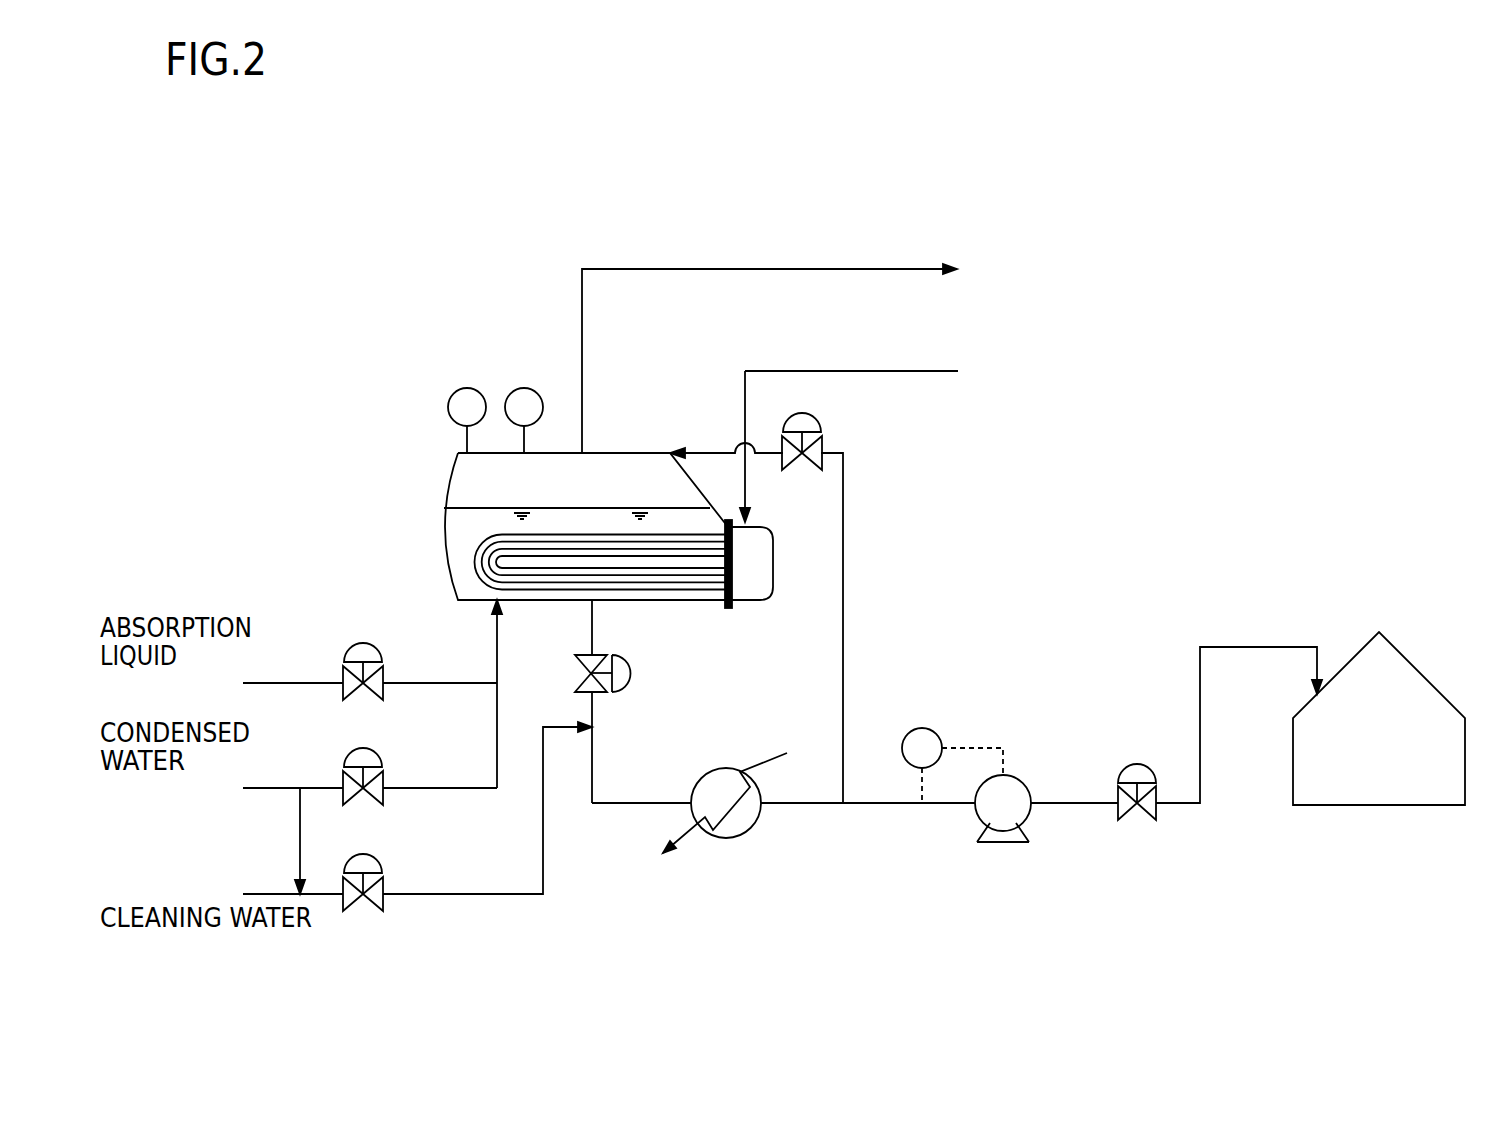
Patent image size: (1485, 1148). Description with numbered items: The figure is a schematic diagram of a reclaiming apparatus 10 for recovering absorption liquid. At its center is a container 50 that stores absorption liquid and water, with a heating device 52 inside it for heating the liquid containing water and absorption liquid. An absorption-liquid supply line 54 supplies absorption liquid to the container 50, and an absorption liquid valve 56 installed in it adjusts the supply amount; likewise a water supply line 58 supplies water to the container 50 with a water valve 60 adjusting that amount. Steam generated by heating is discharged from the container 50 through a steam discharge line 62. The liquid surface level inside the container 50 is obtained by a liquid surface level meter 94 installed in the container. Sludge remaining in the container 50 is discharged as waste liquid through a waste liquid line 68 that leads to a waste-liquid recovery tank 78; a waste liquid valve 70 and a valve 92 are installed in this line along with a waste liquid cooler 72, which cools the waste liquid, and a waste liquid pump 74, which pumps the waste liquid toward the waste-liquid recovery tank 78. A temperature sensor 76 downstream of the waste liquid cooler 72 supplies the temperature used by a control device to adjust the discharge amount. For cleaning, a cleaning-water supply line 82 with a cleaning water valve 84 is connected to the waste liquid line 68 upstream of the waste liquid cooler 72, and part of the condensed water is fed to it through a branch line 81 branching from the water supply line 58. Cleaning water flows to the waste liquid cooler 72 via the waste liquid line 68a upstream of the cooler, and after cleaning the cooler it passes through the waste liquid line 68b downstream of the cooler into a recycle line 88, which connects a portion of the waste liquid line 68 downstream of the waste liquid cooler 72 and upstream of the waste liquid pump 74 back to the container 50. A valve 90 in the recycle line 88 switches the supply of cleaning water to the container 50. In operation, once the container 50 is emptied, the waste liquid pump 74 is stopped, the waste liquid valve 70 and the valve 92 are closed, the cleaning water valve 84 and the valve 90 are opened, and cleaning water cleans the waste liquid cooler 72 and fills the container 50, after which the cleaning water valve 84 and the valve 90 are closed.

The reclaiming apparatus 10 is at (1395, 165).
The container 50 is at (648, 453).
The heating device 52 is at (700, 600).
The absorption-liquid supply line 54 is at (290, 683).
The absorption liquid valve 56 is at (366, 646).
The water supply line 58 is at (450, 788).
The water valve 60 is at (366, 751).
The steam discharge line 62 is at (731, 269).
The waste liquid line 68 is at (596, 745).
The waste liquid line upstream of the waste liquid cooler 68a is at (628, 803).
The waste liquid line downstream of the waste liquid cooler 68b is at (803, 803).
The waste liquid valve 70 is at (634, 680).
The waste liquid cooler 72 is at (727, 838).
The waste liquid pump 74 is at (1022, 780).
The temperature sensor 76 is at (922, 728).
The waste-liquid recovery tank 78 is at (1430, 683).
The branch line 81 is at (300, 838).
The cleaning-water supply line 82 is at (450, 895).
The cleaning water valve 84 is at (366, 857).
The recycle line 88 is at (846, 577).
The valve 90 is at (830, 420).
The valve 92 is at (1137, 763).
The liquid surface level meter 94 is at (524, 388).